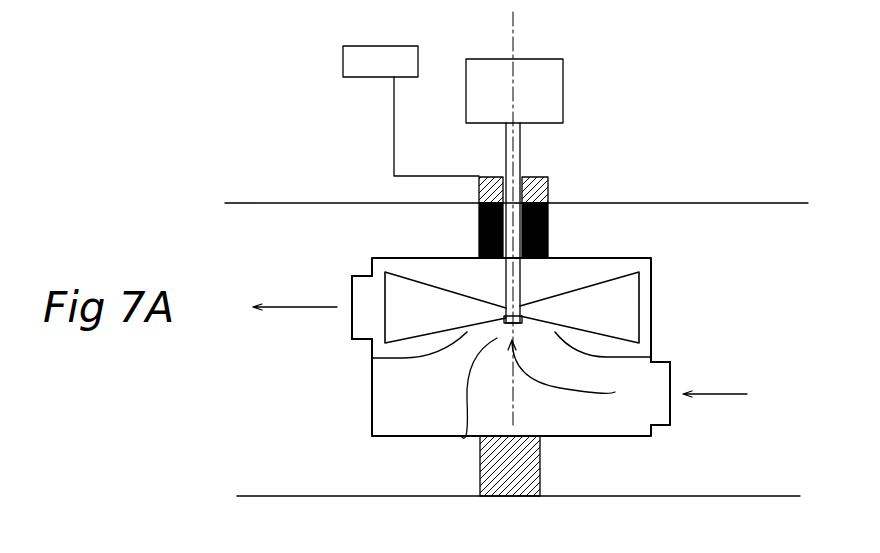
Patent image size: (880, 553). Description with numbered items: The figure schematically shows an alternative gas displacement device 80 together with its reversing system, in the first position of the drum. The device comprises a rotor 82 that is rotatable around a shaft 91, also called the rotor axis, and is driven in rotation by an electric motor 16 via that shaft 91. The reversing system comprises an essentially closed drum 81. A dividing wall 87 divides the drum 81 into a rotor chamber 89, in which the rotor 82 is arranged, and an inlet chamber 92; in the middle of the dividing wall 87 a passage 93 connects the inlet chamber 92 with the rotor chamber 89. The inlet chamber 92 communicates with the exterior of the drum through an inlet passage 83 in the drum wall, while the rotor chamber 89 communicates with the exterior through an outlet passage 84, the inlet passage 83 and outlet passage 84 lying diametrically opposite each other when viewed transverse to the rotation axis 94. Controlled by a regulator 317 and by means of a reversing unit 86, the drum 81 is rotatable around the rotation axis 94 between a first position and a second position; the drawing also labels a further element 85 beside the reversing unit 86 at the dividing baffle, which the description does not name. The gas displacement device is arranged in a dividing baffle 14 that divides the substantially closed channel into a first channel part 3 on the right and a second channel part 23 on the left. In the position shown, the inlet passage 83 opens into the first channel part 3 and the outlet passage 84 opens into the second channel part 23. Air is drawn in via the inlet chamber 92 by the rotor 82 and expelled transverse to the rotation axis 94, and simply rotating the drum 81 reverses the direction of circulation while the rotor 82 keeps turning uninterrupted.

The first channel part 3 is at (762, 217).
The dividing baffle 14 is at (548, 222).
The electric motor 16 is at (537, 68).
The second channel part 23 is at (287, 215).
The gas displacement device 80 is at (613, 127).
The drum 81 is at (651, 266).
The rotor 82 is at (422, 292).
The inlet passage 83 is at (670, 377).
The outlet passage 84 is at (360, 322).
The coil 85 is at (478, 213).
The reversing unit 86 is at (549, 183).
The dividing wall 87 is at (403, 358).
The rotor chamber 89 is at (557, 273).
The shaft 91 is at (521, 145).
The inlet chamber 92 is at (620, 413).
The passage 93 is at (462, 437).
The rotation axis 94 is at (510, 410).
The regulator 317 is at (397, 50).